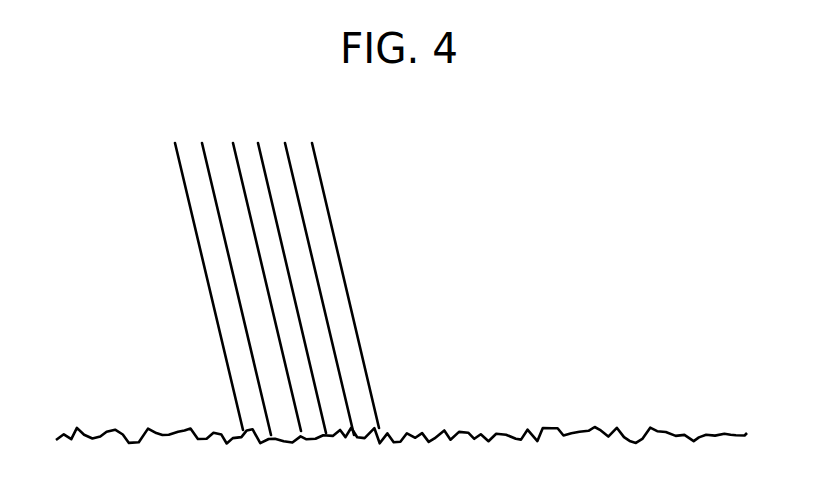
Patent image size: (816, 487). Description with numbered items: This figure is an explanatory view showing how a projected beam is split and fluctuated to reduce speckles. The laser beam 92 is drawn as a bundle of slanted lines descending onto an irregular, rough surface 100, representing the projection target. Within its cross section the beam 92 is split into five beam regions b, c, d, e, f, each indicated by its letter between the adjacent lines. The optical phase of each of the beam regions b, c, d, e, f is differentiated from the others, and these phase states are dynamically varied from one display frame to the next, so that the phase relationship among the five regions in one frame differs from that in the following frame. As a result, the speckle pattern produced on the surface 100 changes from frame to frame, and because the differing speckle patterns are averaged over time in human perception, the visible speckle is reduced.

The laser beam 92 is at (329, 289).
The rough surface 100 is at (593, 430).
The beam region b is at (236, 289).
The beam region c is at (267, 287).
The beam region d is at (292, 288).
The beam region e is at (319, 289).
The beam region f is at (345, 285).